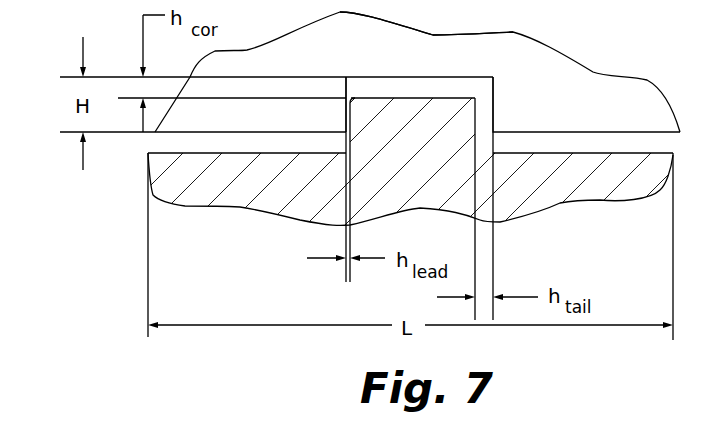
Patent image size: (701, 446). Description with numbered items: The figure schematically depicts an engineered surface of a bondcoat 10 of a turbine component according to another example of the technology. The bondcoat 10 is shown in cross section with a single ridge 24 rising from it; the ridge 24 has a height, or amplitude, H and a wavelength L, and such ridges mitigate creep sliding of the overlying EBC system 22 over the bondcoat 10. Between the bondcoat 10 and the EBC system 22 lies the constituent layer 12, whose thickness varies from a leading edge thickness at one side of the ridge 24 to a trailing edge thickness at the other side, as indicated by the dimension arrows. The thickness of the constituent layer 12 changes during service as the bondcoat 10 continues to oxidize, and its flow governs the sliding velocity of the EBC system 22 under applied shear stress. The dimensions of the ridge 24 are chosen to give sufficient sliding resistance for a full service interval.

The bondcoat 10 is at (272, 191).
The constituent layer 12 is at (425, 86).
The EBC system 22 is at (560, 85).
The ridge 24 is at (417, 137).